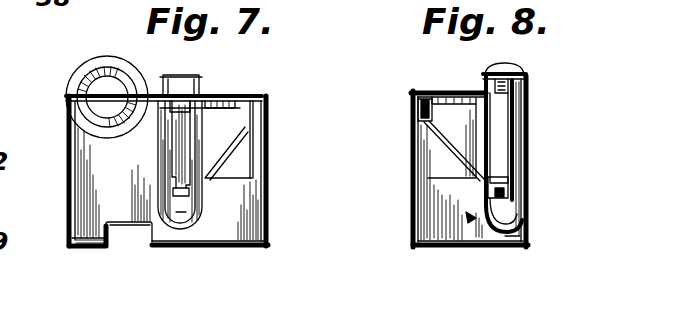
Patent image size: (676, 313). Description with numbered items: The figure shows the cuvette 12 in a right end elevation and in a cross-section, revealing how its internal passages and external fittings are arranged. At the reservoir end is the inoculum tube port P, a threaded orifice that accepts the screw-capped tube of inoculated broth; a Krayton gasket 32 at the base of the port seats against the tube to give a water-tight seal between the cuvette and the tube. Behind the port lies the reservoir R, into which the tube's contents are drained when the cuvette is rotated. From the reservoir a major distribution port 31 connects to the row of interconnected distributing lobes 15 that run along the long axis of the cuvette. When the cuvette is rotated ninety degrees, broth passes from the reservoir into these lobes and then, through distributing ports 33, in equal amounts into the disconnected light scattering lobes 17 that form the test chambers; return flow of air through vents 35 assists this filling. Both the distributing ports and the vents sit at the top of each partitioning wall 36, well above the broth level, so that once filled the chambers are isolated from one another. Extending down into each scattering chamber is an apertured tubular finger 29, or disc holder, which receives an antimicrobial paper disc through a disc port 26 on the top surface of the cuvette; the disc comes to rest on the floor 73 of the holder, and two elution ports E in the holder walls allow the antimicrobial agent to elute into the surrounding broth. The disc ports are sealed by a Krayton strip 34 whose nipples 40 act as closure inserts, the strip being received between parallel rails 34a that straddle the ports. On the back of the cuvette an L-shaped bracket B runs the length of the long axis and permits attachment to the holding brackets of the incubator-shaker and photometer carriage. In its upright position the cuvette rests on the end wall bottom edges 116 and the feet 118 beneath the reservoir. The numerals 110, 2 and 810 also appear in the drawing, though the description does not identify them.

In FIG. 7, the inoculum tube port P is at (108, 92).
In FIG. 7, the reservoir R is at (93, 147).
In FIG. 7, the cuvette 12 is at (62, 193).
In FIG. 8, the cuvette 12 is at (410, 198).
In FIG. 7, the feet 118 is at (74, 252).
In FIG. 7, the light scattering lobes 17 is at (166, 228).
In FIG. 8, the light scattering lobes 17 is at (521, 230).
In FIG. 7, the end wall bottom edges 116 is at (240, 246).
In FIG. 7, the side wall 110 is at (253, 202).
In FIG. 8, the side wall 110 is at (444, 227).
In FIG. 7, the L-shaped bracket B is at (246, 132).
In FIG. 8, the L-shaped bracket B is at (421, 118).
In FIG. 7, the Krayton gasket 32 is at (82, 86).
In FIG. 7, the parallel rails 34a is at (186, 75).
In FIG. 8, the parallel rails 34a is at (511, 75).
In FIG. 7, the strip 34 is at (198, 86).
In FIG. 8, the strip 34 is at (522, 82).
In FIG. 7, the nipples 40 is at (186, 104).
In FIG. 8, the nipples 40 is at (528, 130).
In FIG. 7, the major distribution port 31 is at (266, 97).
In FIG. 8, the major distribution port 31 is at (477, 95).
In FIG. 7, the distributing ports 33 is at (254, 106).
In FIG. 8, the distributing ports 33 is at (443, 92).
In FIG. 7, the apertured tubular fingers 29 is at (178, 143).
In FIG. 8, the apertured tubular fingers 29 is at (516, 160).
In FIG. 7, the lobes 15 is at (212, 156).
In FIG. 8, the lobes 15 is at (450, 144).
In FIG. 7, the bend 2 is at (177, 221).
In FIG. 8, the partitioning walls 36 is at (474, 133).
In FIG. 8, the disc ports 26 is at (522, 91).
In FIG. 8, the vents 35 is at (527, 108).
In FIG. 8, the floor 73 is at (508, 182).
In FIG. 8, the elution ports E is at (514, 212).
In FIG. 8, the flow path 810 is at (468, 216).